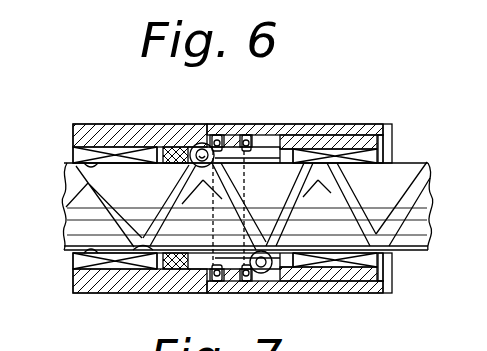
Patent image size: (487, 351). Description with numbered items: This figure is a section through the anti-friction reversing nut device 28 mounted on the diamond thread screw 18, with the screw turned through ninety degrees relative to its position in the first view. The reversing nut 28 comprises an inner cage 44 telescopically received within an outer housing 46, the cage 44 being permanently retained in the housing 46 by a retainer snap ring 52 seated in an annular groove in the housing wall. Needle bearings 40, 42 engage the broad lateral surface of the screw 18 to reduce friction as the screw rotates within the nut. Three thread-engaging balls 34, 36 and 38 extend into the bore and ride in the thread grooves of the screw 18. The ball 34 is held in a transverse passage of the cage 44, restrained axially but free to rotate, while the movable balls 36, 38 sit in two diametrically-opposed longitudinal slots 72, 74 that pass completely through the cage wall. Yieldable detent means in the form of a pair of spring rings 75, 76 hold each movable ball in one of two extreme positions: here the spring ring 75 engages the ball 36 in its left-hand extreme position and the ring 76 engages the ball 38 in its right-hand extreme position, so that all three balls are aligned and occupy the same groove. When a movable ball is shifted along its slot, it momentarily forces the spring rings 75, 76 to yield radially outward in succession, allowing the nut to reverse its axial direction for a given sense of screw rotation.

The diamond thread screw 18 is at (405, 241).
The anti-friction reversing nut device 28 is at (145, 120).
The ball 34 is at (240, 183).
The ball 36 is at (204, 151).
The ball 38 is at (260, 274).
The needle bearing 40 is at (86, 157).
The needle bearing 42 is at (362, 157).
The cage 44 is at (323, 270).
The housing 46 is at (132, 285).
The retainer snap ring 52 is at (387, 142).
The longitudinal slot 72 is at (273, 141).
The longitudinal slot 74 is at (230, 265).
The spring ring 75 is at (221, 135).
The spring ring 76 is at (250, 137).